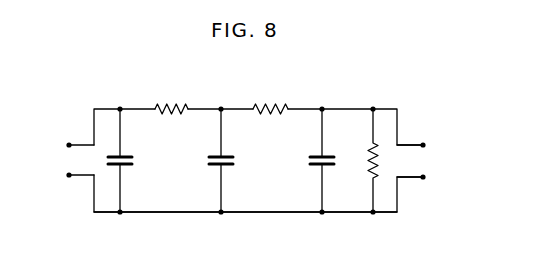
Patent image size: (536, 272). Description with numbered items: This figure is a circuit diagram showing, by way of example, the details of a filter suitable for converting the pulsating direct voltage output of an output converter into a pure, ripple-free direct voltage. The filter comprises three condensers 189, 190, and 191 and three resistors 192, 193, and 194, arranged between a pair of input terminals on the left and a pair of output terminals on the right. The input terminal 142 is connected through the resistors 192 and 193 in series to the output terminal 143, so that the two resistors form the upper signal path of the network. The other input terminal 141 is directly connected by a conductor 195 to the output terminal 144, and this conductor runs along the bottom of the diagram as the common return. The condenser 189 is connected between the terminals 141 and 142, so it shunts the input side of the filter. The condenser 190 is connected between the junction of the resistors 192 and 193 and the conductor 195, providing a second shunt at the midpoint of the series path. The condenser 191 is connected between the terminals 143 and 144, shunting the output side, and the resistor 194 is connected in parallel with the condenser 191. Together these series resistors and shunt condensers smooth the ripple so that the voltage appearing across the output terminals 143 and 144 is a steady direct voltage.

The input terminal 141 is at (69, 175).
The input terminal 142 is at (69, 145).
The output terminal 143 is at (424, 145).
The output terminal 144 is at (424, 177).
The condenser 189 is at (130, 156).
The condenser 190 is at (226, 156).
The condenser 191 is at (317, 166).
The resistor 192 is at (172, 108).
The resistor 193 is at (272, 108).
The resistor 194 is at (368, 150).
The conductor 195 is at (185, 212).